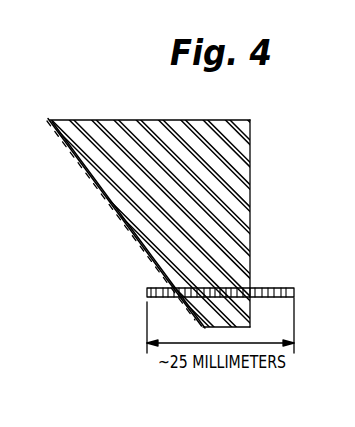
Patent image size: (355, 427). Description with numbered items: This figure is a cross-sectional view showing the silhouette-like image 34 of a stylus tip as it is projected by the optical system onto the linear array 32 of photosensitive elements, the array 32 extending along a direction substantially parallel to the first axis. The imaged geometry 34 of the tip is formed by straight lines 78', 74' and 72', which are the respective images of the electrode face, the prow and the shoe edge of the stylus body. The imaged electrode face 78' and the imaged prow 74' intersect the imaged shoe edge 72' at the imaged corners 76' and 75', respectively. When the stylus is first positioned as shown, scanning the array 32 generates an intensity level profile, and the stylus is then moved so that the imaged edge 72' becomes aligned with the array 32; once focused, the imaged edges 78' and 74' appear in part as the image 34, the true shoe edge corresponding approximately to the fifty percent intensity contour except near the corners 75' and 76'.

The imaged electrode face line 78' is at (178, 224).
The imaged prow line 74' is at (121, 220).
The linear array 32 is at (294, 289).
The silhouette-like image 34 is at (150, 280).
The imaged corner 75' is at (177, 319).
The imaged corner 76' is at (266, 290).
The imaged shoe edge 72' is at (266, 322).